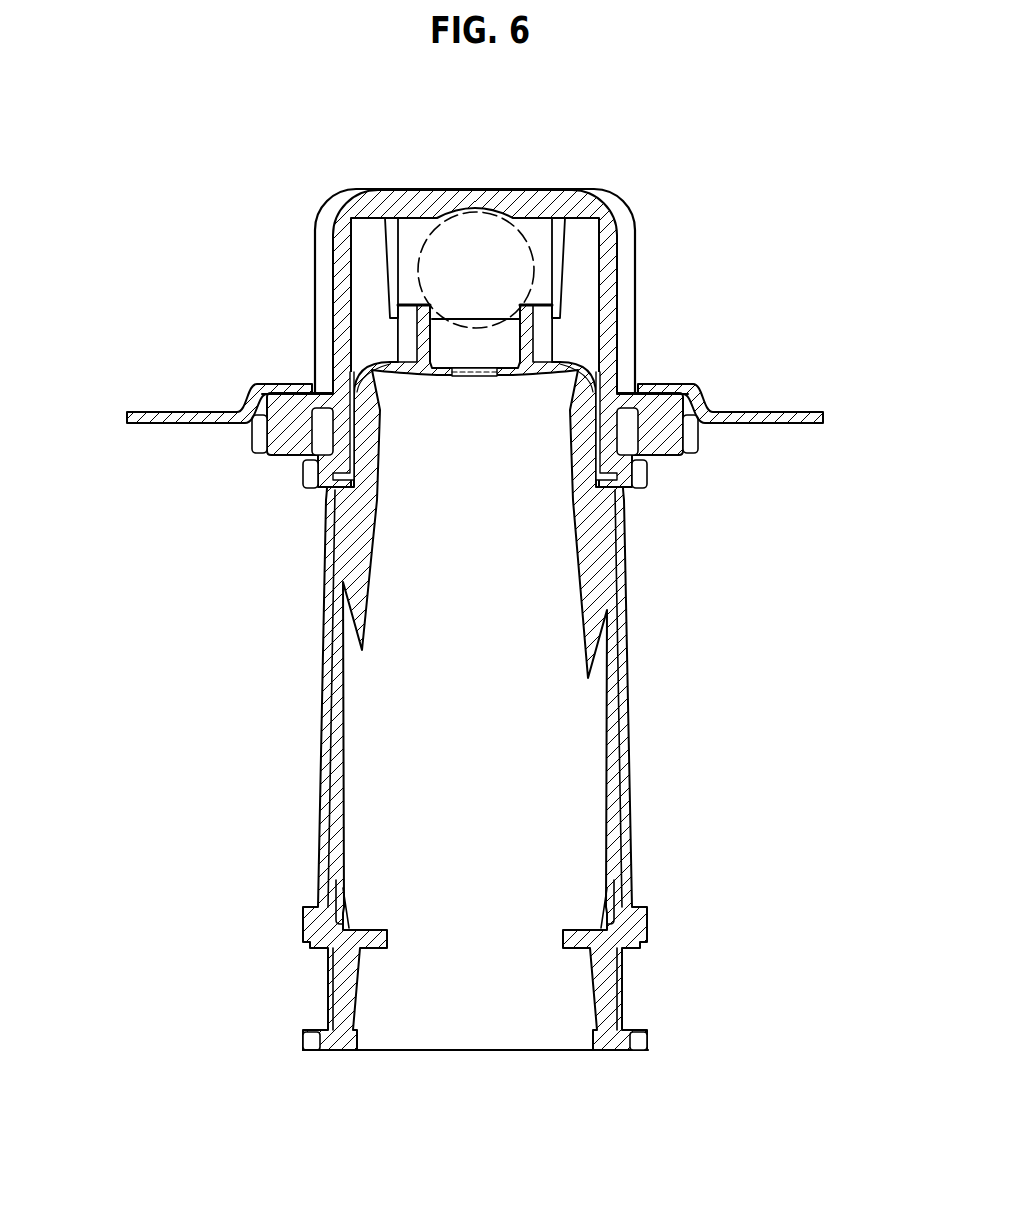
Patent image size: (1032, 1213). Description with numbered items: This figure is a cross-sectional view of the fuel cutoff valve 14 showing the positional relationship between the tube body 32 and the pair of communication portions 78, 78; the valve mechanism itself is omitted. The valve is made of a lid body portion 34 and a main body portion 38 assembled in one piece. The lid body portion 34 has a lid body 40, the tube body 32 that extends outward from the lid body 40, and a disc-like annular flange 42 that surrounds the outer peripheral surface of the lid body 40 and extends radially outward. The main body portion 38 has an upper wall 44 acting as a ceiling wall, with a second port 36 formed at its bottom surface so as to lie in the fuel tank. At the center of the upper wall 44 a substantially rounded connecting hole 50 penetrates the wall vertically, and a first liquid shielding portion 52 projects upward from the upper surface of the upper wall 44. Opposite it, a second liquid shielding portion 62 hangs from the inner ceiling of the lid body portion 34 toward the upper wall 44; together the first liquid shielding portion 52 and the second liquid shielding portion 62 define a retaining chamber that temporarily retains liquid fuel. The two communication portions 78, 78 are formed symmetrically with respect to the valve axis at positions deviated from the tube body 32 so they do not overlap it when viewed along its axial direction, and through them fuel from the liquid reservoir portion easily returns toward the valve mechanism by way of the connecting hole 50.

The fuel cutoff valve 14 is at (674, 154).
The tube body 32 is at (501, 202).
The lid body portion 34 is at (657, 276).
The second port 36 is at (358, 1020).
The main body portion 38 is at (644, 656).
The lid body 40 is at (335, 266).
The annular flange 42 is at (823, 416).
The upper wall 44 is at (441, 378).
The connecting hole 50 is at (492, 378).
The first liquid shielding portion 52 is at (577, 337).
The second liquid shielding portion 62 is at (586, 254).
The communication portion 78 is at (668, 348).